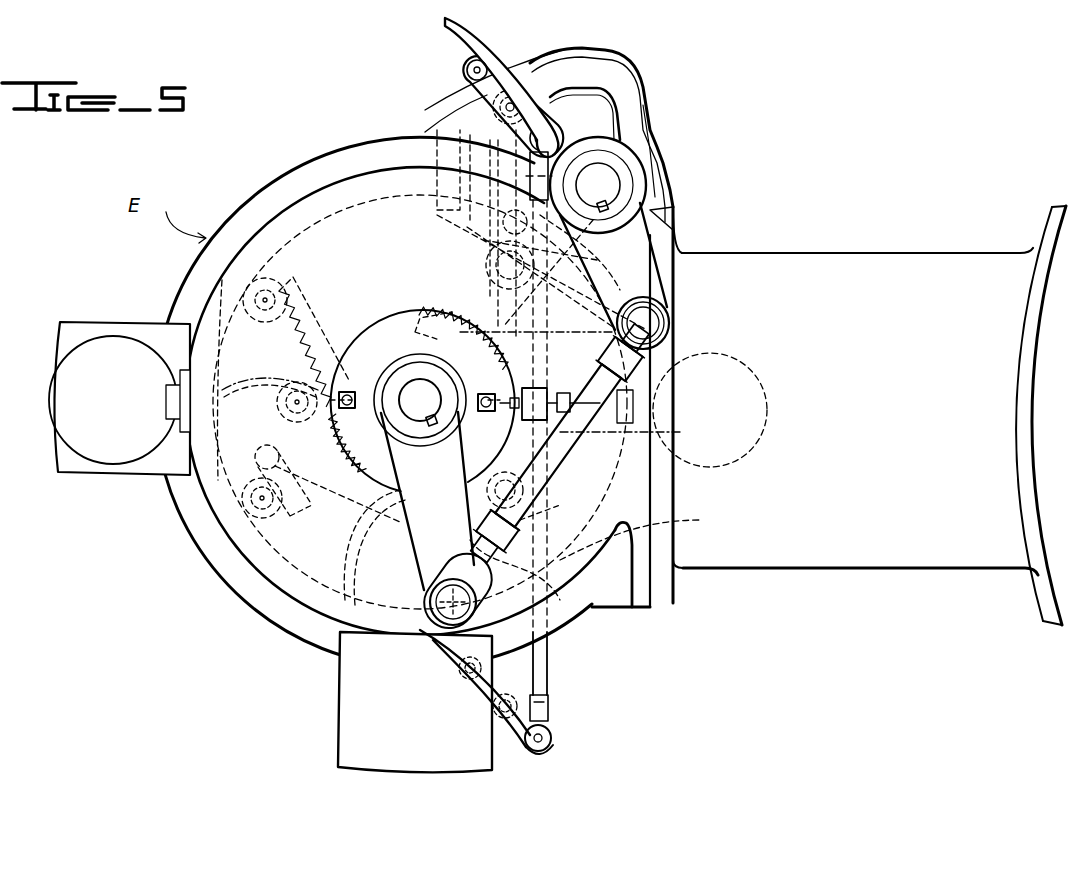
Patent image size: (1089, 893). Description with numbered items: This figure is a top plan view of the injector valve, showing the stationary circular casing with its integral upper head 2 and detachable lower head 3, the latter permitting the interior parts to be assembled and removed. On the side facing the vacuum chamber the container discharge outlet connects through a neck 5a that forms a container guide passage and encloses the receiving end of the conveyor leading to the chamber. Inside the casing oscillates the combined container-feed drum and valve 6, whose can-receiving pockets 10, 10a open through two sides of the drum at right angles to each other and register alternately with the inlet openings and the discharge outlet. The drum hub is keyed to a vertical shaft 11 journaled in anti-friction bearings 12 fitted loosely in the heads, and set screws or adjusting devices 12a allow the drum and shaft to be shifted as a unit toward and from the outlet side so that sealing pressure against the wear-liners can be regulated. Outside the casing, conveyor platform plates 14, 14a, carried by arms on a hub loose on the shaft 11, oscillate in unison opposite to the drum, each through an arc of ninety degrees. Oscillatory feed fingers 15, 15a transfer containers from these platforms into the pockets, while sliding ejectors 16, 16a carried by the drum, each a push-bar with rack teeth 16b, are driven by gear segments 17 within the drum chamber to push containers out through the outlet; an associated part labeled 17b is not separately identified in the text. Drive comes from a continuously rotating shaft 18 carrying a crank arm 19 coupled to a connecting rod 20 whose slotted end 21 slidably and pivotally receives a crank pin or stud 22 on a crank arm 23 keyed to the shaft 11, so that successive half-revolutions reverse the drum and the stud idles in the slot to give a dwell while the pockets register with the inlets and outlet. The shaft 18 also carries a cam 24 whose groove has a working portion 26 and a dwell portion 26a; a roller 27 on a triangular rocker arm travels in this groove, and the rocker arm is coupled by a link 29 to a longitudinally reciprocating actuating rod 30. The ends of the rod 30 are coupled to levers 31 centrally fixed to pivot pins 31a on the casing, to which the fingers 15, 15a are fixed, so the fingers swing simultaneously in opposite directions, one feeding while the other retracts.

The integral upper head 2 is at (262, 540).
The detachable lower head 3 is at (195, 537).
The neck 5a is at (818, 262).
The combined container-feed drum and valve 6 is at (300, 232).
The can-receiving pocket 10 is at (337, 571).
The can-receiving pocket 10a is at (630, 300).
The shaft 11 is at (410, 394).
The anti-friction bearings 12 is at (400, 322).
The set screws or adjusting devices 12a is at (556, 500).
The conveyor member 14 is at (415, 702).
The conveyor member 14a is at (112, 330).
The feed finger 15 is at (432, 667).
The feed finger 15a is at (455, 36).
The container ejector 16 is at (283, 498).
The container ejector 16a is at (662, 406).
The rack teeth 16b is at (476, 326).
The gear segment 17 is at (242, 414).
The sector guide 17b is at (452, 283).
The shaft 18 is at (600, 186).
The crank arm 19 is at (660, 242).
The connecting rod 20 is at (592, 450).
The slotted end 21 is at (488, 592).
The crank pin or stud 22 is at (432, 604).
The crank arm 23 is at (416, 530).
The cam 24 is at (648, 105).
The active or working portion 26 is at (635, 138).
The inactive or dwell portion 26a is at (576, 60).
The roller 27 is at (528, 332).
The connecting rod or link 29 is at (415, 431).
The actuating rod 30 is at (548, 668).
The lever 31 is at (478, 72).
The pivot pin and link plate 31a is at (514, 92).